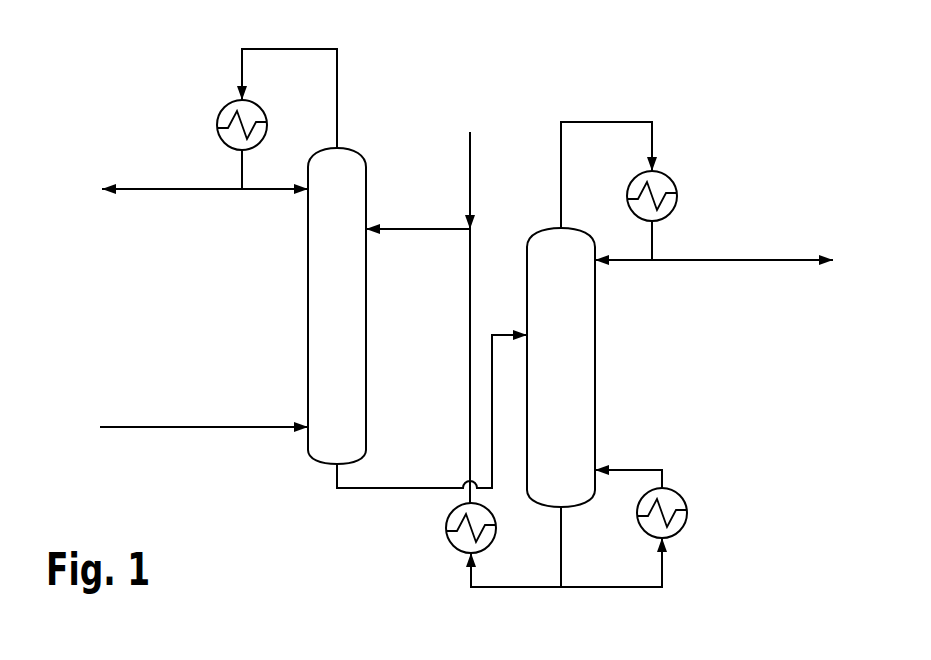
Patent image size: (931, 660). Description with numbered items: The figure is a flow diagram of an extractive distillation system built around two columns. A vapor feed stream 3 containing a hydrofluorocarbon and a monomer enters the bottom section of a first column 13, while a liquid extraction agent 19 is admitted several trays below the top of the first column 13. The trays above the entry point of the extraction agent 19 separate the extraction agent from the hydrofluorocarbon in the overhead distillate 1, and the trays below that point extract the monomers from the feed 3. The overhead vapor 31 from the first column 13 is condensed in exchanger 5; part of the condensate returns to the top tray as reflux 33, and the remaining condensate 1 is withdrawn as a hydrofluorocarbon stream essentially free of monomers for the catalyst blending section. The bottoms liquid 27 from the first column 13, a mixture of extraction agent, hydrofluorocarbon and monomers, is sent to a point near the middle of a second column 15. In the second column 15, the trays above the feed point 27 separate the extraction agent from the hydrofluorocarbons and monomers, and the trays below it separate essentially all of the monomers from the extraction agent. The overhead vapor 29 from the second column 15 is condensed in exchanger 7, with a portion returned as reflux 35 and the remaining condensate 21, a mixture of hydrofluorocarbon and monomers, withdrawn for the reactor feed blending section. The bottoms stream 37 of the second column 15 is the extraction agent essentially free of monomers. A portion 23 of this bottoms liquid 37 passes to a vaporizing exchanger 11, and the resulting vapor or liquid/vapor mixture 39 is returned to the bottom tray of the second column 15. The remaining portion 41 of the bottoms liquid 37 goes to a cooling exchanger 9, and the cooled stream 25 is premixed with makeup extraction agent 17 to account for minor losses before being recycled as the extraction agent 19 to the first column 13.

The overhead distillate 1 is at (163, 189).
The vapor feed stream 3 is at (192, 429).
The condensing exchanger 5 is at (222, 111).
The condensing exchanger 7 is at (674, 184).
The cooling exchanger 9 is at (453, 546).
The vaporizing exchanger 11 is at (683, 527).
The first column 13 is at (308, 280).
The second column 15 is at (595, 355).
The makeup extraction agent 17 is at (470, 155).
The liquid extraction agent 19 is at (452, 228).
The remaining condensate 21 is at (727, 260).
The portion of bottoms liquid 23 is at (573, 588).
The cooled stream 25 is at (470, 300).
The bottoms liquid 27 is at (365, 490).
The overhead vapor 29 is at (592, 122).
The overhead vapor 31 is at (338, 49).
The reflux 33 is at (262, 191).
The reflux 35 is at (625, 262).
The bottoms stream 37 is at (562, 537).
The vapor or liquid/vapor mixture 39 is at (640, 470).
The remaining portion of bottoms liquid 41 is at (518, 588).